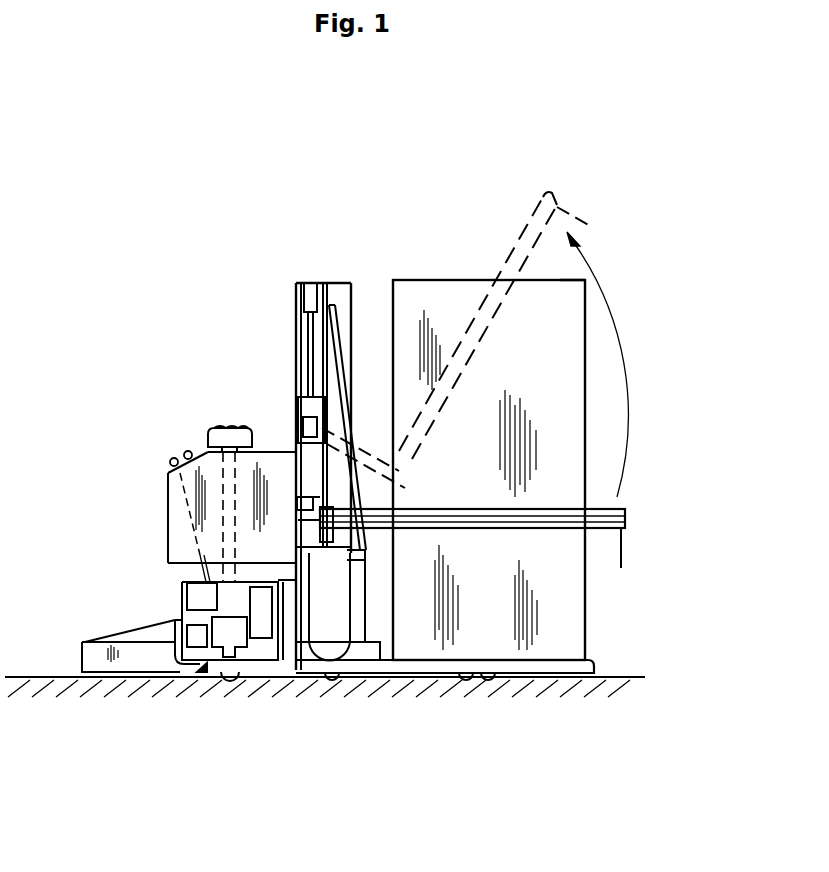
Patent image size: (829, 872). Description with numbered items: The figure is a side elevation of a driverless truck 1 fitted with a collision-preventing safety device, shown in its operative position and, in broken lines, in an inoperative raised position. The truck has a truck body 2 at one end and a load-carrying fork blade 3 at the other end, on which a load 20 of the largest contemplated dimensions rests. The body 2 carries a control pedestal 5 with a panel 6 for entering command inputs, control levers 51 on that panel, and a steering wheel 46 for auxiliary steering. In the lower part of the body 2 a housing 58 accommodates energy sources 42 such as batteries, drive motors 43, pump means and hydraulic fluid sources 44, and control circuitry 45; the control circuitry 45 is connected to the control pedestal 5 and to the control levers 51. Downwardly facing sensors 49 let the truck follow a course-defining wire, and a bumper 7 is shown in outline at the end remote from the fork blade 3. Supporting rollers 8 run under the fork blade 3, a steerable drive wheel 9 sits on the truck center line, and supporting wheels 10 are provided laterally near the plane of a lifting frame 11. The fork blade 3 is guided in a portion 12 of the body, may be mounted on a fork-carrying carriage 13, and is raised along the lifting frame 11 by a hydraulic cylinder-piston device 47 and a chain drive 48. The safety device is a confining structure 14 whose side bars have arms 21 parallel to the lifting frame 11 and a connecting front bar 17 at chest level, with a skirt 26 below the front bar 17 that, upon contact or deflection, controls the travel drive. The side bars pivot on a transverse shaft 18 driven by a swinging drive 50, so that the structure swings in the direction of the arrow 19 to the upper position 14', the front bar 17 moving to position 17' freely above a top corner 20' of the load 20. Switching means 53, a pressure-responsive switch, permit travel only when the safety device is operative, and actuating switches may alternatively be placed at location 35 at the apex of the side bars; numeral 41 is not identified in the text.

The driverless truck 1 is at (212, 450).
The truck body 2 is at (180, 596).
The load-carrying fork blade 3 is at (523, 663).
The control pedestal 5 is at (207, 490).
The panel 6 is at (168, 467).
The bumper 7 is at (103, 655).
The supporting rollers 8 is at (467, 680).
The steerable drive wheel 9 is at (230, 680).
The supporting rollers or wheels 10 is at (333, 680).
The lifting frame 11 is at (337, 303).
The portion of the truck body 12 is at (342, 627).
The fork-carrying carriage 13 is at (290, 580).
The confining structure 14 is at (523, 576).
The upper position of confining structure 14' is at (439, 314).
The front bar 17 is at (513, 530).
The raised position of front bar 17' is at (585, 176).
The transverse shaft 18 is at (299, 398).
The arrow 19 is at (627, 373).
The load 20 is at (545, 470).
The top corner of the load 20' is at (630, 253).
The arms of side bars 21 is at (297, 455).
The skirt 26 is at (622, 563).
The alternative actuating switch location 35 is at (312, 520).
The control unit 41 is at (197, 603).
The energy sources 42 is at (192, 635).
The drive motors 43 is at (222, 630).
The pump means and hydraulic fluid sources 44 is at (262, 627).
The control circuitry 45 is at (175, 620).
The steering wheel 46 is at (228, 428).
The hydraulic cylinder-piston device 47 is at (318, 617).
The chain drive 48 is at (333, 347).
The sensors 49 is at (207, 664).
The swinging drive 50 is at (295, 307).
The control levers 51 is at (173, 461).
The switching means 53 is at (297, 502).
The housing 58 is at (250, 577).